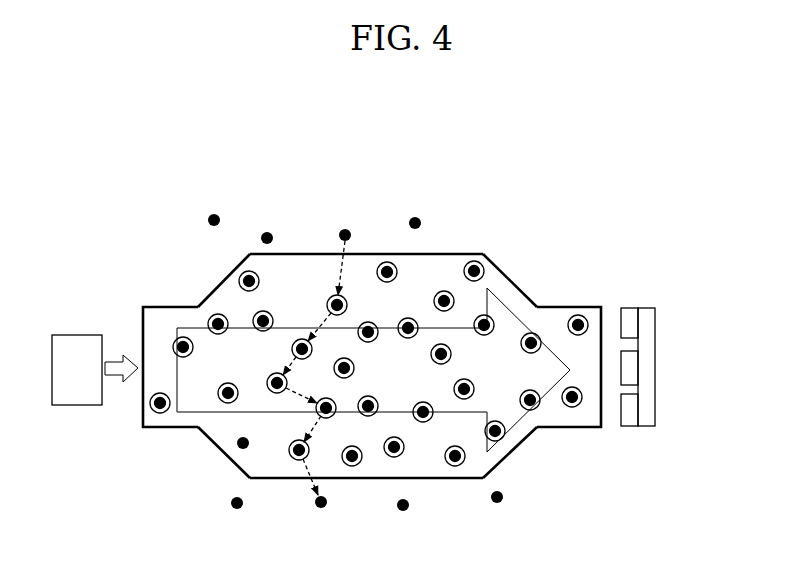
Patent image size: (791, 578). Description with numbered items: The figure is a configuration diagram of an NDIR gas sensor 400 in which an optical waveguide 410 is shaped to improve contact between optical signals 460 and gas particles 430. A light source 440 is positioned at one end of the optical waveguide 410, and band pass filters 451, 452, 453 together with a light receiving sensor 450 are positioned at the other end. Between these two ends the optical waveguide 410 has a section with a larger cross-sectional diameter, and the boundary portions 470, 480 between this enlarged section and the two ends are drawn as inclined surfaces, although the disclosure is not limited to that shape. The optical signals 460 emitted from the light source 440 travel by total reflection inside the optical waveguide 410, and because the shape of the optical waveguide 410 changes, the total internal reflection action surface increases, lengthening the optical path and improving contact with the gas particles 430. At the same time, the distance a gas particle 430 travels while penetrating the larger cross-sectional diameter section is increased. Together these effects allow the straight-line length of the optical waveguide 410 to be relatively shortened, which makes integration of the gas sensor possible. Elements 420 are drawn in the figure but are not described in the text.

The device 400 is at (415, 154).
The optical waveguide 410 is at (435, 479).
The electrode 420 is at (387, 262).
The gas particles 430 is at (214, 214).
The light source 440 is at (75, 335).
The light receiving sensor 450 is at (650, 405).
The band pass filter 451 is at (628, 318).
The band pass filter 452 is at (636, 366).
The band pass filter 453 is at (628, 416).
The optical signals 460 is at (510, 318).
The boundary portion 470 is at (222, 283).
The boundary portion 480 is at (493, 263).